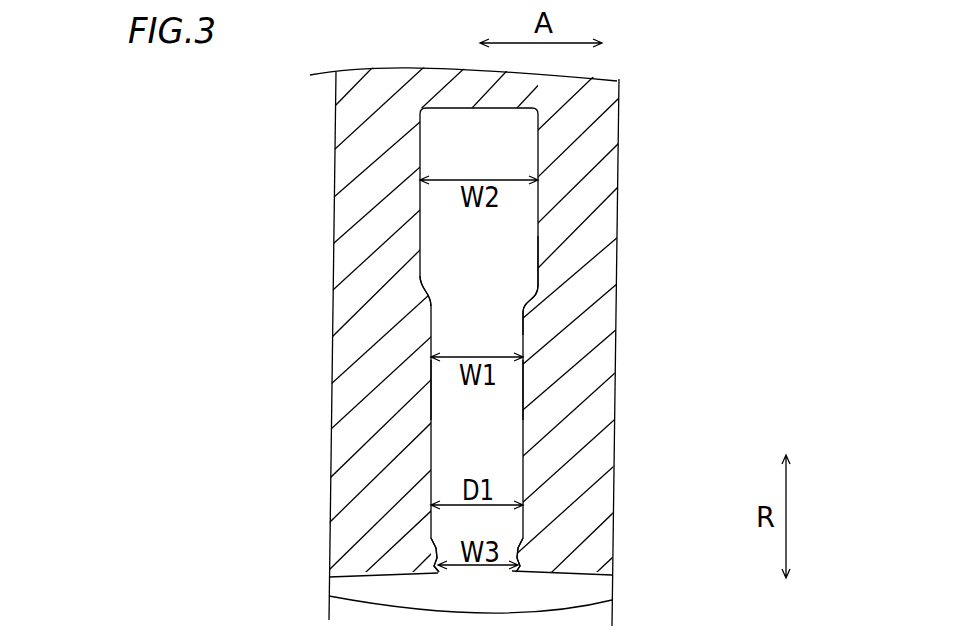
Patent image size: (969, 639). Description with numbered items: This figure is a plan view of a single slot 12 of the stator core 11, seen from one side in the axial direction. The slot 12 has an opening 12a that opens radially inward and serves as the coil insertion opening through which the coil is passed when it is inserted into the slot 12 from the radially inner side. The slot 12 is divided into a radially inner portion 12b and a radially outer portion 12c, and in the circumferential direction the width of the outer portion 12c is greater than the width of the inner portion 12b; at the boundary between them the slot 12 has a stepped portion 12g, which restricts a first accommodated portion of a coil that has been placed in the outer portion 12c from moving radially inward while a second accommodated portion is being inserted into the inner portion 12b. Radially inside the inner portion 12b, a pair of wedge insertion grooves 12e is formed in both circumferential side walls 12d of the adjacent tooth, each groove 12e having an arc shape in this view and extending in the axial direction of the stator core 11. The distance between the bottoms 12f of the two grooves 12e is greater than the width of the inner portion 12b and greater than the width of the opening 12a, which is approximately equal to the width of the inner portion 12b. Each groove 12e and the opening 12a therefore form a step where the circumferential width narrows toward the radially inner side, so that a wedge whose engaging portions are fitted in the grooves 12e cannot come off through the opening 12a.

The stator core 11 is at (394, 128).
The slot 12 is at (713, 247).
The opening 12a is at (438, 574).
The radially inner portion 12b is at (523, 329).
The radially outer portion 12c is at (528, 248).
The circumferential side wall 12d is at (436, 402).
The wedge insertion groove 12e is at (432, 542).
The bottom 12f is at (430, 550).
The stepped portion 12g is at (427, 290).